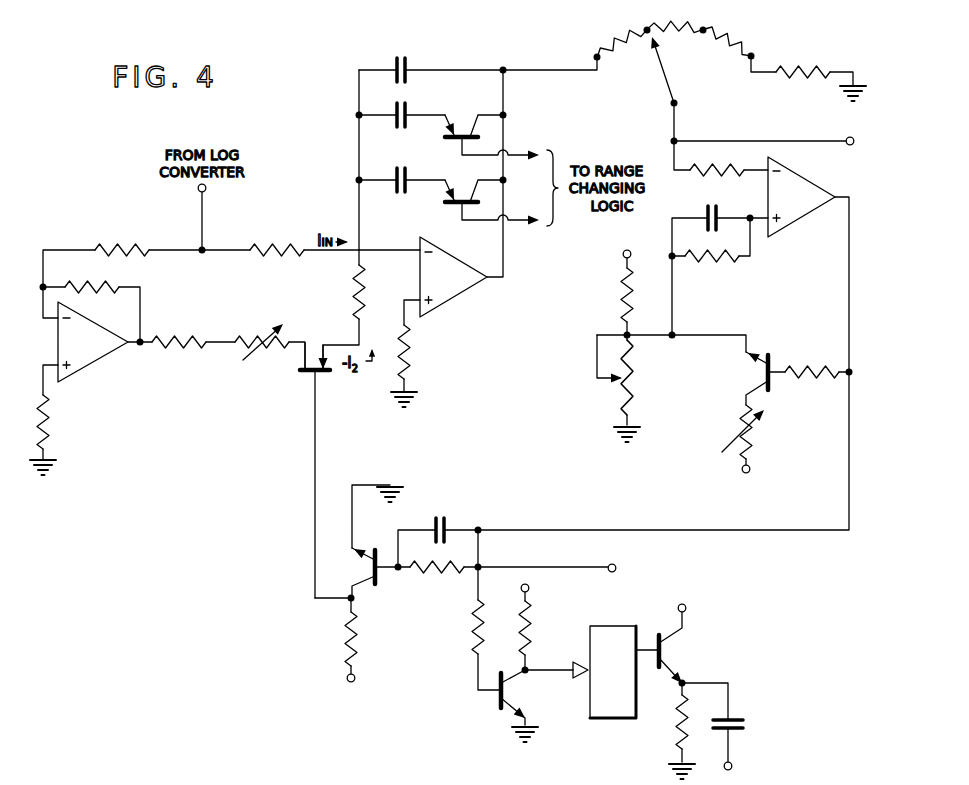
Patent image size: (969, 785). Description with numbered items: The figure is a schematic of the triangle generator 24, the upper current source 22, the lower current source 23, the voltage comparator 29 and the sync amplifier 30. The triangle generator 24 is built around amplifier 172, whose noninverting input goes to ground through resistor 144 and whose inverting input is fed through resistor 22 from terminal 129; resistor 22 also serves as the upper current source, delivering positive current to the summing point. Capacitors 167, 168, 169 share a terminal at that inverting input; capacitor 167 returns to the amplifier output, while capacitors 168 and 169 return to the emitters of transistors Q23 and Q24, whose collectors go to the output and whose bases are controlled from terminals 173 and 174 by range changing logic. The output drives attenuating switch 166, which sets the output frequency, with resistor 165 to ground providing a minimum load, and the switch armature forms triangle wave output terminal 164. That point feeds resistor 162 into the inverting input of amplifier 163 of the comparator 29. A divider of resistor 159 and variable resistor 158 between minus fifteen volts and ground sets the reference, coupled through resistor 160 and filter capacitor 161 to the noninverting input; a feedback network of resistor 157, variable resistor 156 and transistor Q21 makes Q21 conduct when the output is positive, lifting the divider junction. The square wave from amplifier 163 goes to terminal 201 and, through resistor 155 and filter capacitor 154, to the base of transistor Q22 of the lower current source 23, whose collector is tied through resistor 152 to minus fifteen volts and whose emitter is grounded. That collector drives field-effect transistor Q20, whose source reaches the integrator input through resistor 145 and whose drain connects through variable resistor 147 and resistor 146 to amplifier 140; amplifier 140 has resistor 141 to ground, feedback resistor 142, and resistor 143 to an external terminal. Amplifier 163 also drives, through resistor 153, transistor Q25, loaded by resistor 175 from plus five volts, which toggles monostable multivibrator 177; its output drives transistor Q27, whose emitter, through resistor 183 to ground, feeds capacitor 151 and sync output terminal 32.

The lower current source 23 is at (184, 467).
The triangle generator 24 is at (504, 361).
The voltage comparator 29 is at (790, 301).
The sync amplifier 30 is at (556, 768).
The upper current source 22 is at (276, 243).
The sync output terminal 32 is at (734, 766).
The terminal 129 is at (207, 188).
The amplifier 140 is at (92, 363).
The resistor 141 is at (54, 423).
The feedback resistor 142 is at (94, 284).
The resistor 143 is at (122, 244).
The resistor 144 is at (410, 357).
The resistor 145 is at (352, 297).
The resistor 146 is at (168, 352).
The variable resistor 147 is at (265, 358).
The field-effect transistor Q20 is at (317, 459).
The capacitor 151 is at (745, 726).
The resistor 152 is at (342, 642).
The resistor 153 is at (476, 630).
The filter capacitor 154 is at (444, 514).
The resistor 155 is at (434, 574).
The variable resistor 156 is at (764, 432).
The resistor 157 is at (816, 364).
The variable resistor 158 is at (633, 386).
The resistor 159 is at (622, 295).
The resistor 160 is at (716, 264).
The filter capacitor 161 is at (710, 203).
The resistor 162 is at (723, 174).
The amplifier 163 is at (796, 226).
The triangle wave output terminal 164 is at (856, 144).
The resistor 165 is at (800, 68).
The attenuating switch 166 is at (645, 86).
The capacitor 167 is at (404, 56).
The capacitor 168 is at (408, 108).
The capacitor 169 is at (402, 166).
The amplifier 172 is at (462, 300).
The terminal 173 is at (549, 156).
The terminal 174 is at (549, 224).
The resistor 175 is at (530, 630).
The monostable multivibrator 177 is at (614, 632).
The resistor 183 is at (672, 722).
The output terminal 201 is at (617, 567).
The transistor Q21 is at (751, 377).
The transistor Q22 is at (344, 571).
The transistor Q23 is at (491, 128).
The transistor Q24 is at (491, 193).
The transistor Q25 is at (533, 706).
The transistor Q27 is at (690, 637).